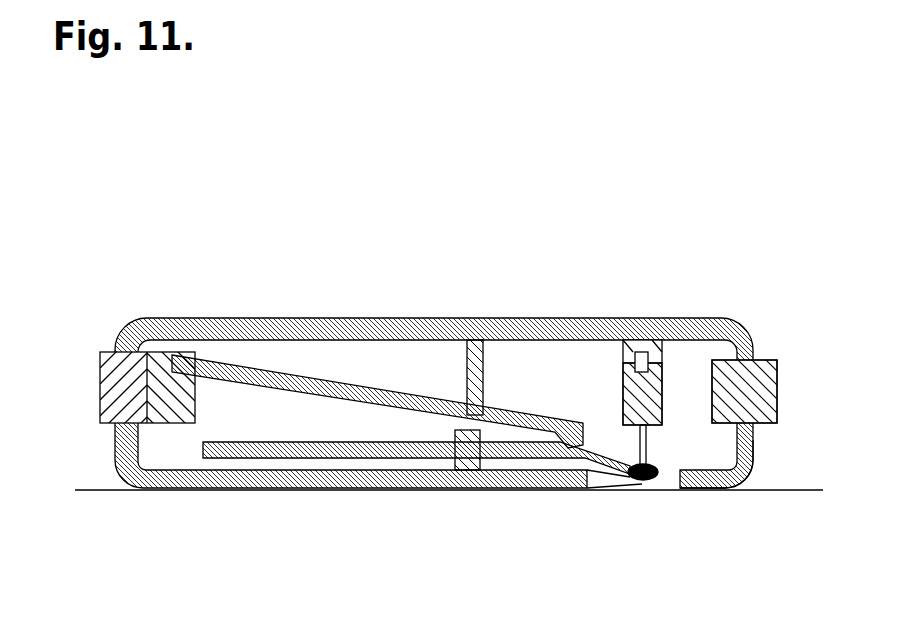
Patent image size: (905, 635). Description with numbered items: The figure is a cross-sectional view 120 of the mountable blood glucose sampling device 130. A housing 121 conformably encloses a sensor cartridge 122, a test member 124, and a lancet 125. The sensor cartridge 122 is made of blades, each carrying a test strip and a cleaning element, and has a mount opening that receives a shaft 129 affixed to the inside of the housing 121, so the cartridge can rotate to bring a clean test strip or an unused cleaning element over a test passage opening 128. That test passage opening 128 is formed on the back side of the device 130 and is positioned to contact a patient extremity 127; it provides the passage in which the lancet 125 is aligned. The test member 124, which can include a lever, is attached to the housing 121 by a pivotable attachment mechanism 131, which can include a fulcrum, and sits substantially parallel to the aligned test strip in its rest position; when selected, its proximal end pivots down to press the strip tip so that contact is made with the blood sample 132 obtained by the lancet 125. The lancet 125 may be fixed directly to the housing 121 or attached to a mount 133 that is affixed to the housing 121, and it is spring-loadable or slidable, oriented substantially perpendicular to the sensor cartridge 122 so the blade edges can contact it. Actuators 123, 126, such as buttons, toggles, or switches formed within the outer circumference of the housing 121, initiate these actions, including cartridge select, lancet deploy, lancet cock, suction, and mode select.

The cross-sectional view 120 is at (181, 104).
The housing 121 is at (308, 318).
The sensor cartridge 122 is at (205, 457).
The actuator 123 is at (100, 381).
The test member 124 is at (533, 413).
The lancet 125 is at (662, 390).
The actuator 126 is at (777, 393).
The patient extremity 127 is at (740, 490).
The test passage opening 128 is at (616, 500).
The shaft 129 is at (458, 460).
The mountable blood glucose sampling device 130 is at (506, 210).
The pivotable attachment mechanism 131 is at (468, 340).
The blood sample 132 is at (650, 480).
The mount 133 is at (636, 368).